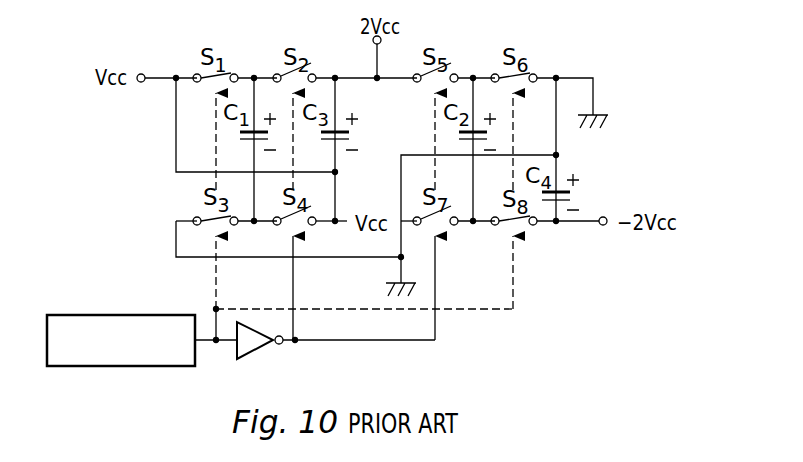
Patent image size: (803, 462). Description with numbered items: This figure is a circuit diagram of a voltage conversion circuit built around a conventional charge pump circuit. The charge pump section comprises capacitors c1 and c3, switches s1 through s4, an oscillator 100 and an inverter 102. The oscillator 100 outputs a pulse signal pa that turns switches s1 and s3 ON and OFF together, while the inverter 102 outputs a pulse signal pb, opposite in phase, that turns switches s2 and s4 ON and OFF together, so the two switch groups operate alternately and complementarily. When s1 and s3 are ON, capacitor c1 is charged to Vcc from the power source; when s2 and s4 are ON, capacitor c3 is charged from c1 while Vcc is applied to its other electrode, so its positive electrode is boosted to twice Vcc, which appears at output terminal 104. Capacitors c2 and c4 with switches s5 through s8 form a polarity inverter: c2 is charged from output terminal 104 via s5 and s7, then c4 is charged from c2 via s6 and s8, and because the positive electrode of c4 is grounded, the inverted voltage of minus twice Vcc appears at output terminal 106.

The oscillator 100 is at (142, 315).
The inverter 102 is at (262, 355).
The output terminal 104 is at (373, 41).
The output terminal 106 is at (603, 226).